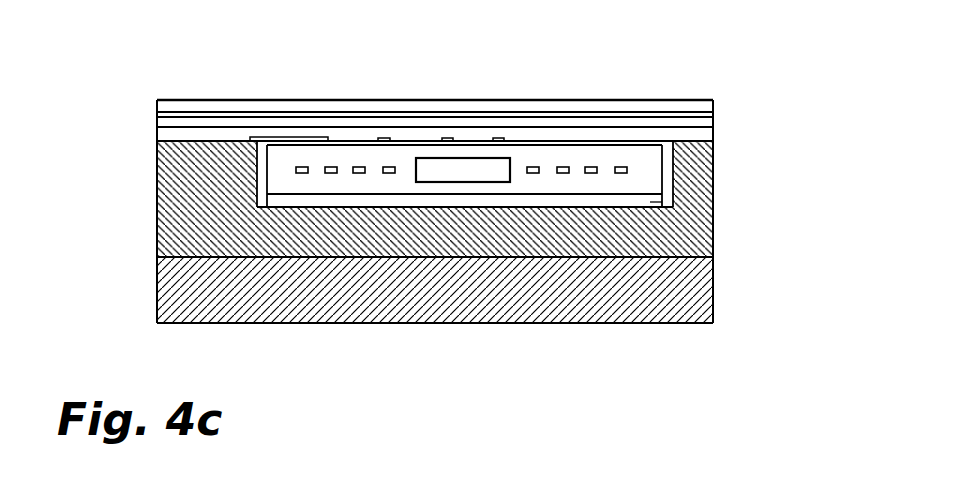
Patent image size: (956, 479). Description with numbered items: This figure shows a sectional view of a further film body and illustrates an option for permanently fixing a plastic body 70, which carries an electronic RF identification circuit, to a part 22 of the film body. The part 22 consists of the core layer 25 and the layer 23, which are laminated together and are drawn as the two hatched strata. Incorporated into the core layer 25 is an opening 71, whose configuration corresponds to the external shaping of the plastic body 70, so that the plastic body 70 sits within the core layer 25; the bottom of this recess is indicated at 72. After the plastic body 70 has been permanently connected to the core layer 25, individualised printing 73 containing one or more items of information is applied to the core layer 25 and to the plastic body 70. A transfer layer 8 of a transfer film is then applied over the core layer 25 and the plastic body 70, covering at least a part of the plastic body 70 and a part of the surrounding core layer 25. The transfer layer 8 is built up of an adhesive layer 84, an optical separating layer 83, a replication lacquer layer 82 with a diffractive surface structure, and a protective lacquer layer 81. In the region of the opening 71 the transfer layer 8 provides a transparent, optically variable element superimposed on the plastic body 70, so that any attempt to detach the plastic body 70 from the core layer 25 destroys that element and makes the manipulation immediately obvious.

The transfer layer 8 is at (152, 100).
The part of the film body 22 is at (100, 143).
The layer 23 is at (157, 288).
The core layer 25 is at (157, 217).
The plastic body 70 is at (534, 153).
The opening 71 is at (667, 155).
The cavity bottom 72 is at (713, 210).
The individualised printing 73 is at (498, 138).
The protective lacquer layer 81 is at (705, 110).
The replication lacquer layer 82 is at (705, 120).
The optical separating layer 83 is at (705, 130).
The adhesive layer 84 is at (713, 142).